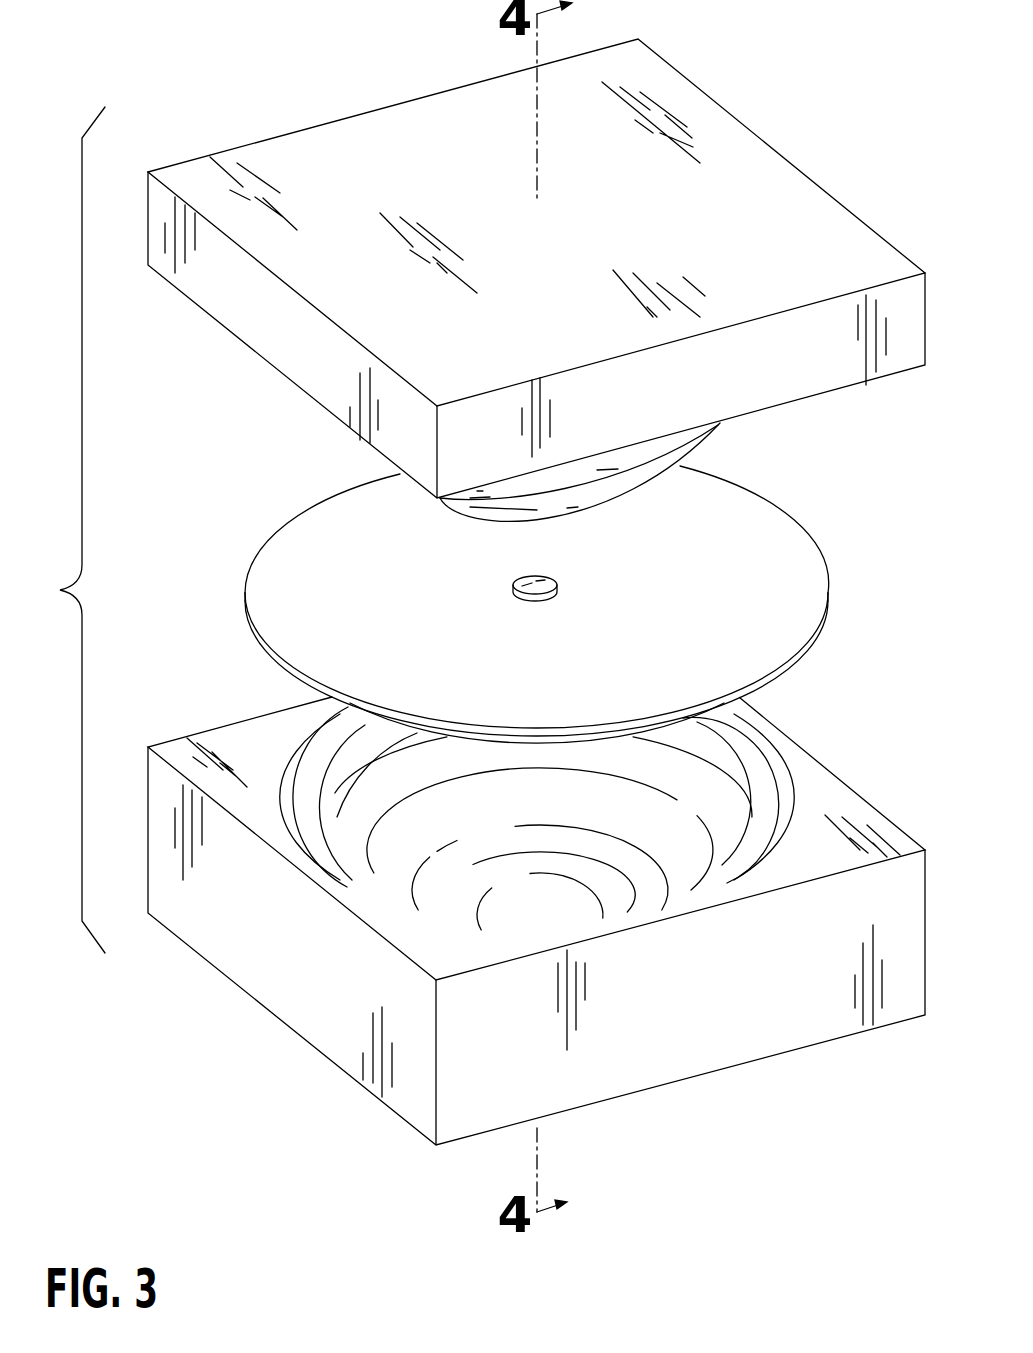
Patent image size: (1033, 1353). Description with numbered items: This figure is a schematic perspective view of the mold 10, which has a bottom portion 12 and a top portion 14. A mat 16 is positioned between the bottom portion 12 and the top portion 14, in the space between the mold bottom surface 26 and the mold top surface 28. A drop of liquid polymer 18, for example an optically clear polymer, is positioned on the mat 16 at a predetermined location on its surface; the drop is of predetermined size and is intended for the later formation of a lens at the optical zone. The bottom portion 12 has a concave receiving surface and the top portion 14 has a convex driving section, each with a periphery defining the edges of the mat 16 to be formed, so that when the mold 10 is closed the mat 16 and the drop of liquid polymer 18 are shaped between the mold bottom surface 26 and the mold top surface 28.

The mold 10 is at (790, 95).
The bottom portion 12 is at (751, 1008).
The top portion 14 is at (716, 389).
The mat 16 is at (815, 633).
The drop of liquid polymer 18 is at (556, 600).
The mold bottom surface 26 is at (365, 797).
The mold top surface 28 is at (647, 463).